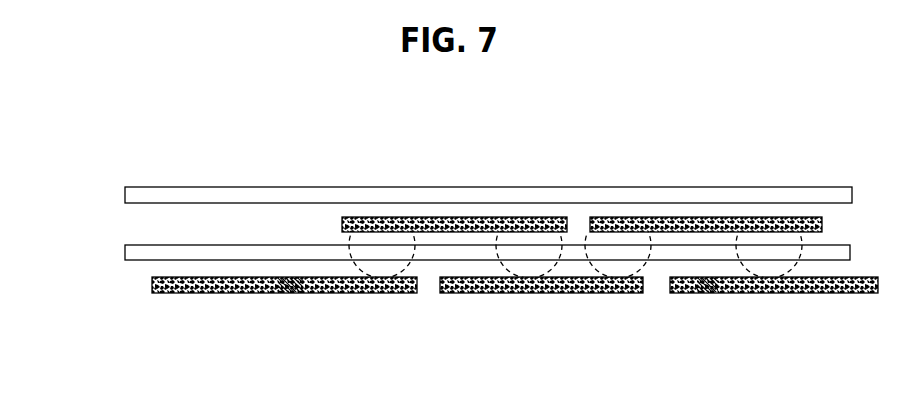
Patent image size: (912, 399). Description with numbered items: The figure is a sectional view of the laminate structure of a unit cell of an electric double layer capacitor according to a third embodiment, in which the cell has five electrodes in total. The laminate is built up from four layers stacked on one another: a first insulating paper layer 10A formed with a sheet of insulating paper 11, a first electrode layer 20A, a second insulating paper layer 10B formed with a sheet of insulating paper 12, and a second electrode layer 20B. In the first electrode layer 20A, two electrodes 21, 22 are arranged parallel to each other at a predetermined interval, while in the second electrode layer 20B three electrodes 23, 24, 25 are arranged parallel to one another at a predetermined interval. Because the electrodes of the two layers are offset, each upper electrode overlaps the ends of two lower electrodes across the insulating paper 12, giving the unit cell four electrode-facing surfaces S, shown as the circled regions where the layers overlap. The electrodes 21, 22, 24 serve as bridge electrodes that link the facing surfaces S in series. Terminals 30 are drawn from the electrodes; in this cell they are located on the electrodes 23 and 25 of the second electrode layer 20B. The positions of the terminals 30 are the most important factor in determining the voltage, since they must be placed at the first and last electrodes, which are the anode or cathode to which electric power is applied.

The first insulating paper layer 10A is at (116, 194).
The second insulating paper layer 10B is at (116, 253).
The insulating paper 11 is at (237, 190).
The insulating paper 12 is at (815, 256).
The first electrode layer 20A is at (116, 224).
The second electrode layer 20B is at (116, 283).
The electrode 21 is at (413, 218).
The electrode 22 is at (729, 218).
The electrode 23 is at (227, 294).
The electrode 24 is at (568, 294).
The electrode 25 is at (743, 294).
The terminals 30 is at (288, 294).
The electrode-facing surfaces S is at (378, 222).